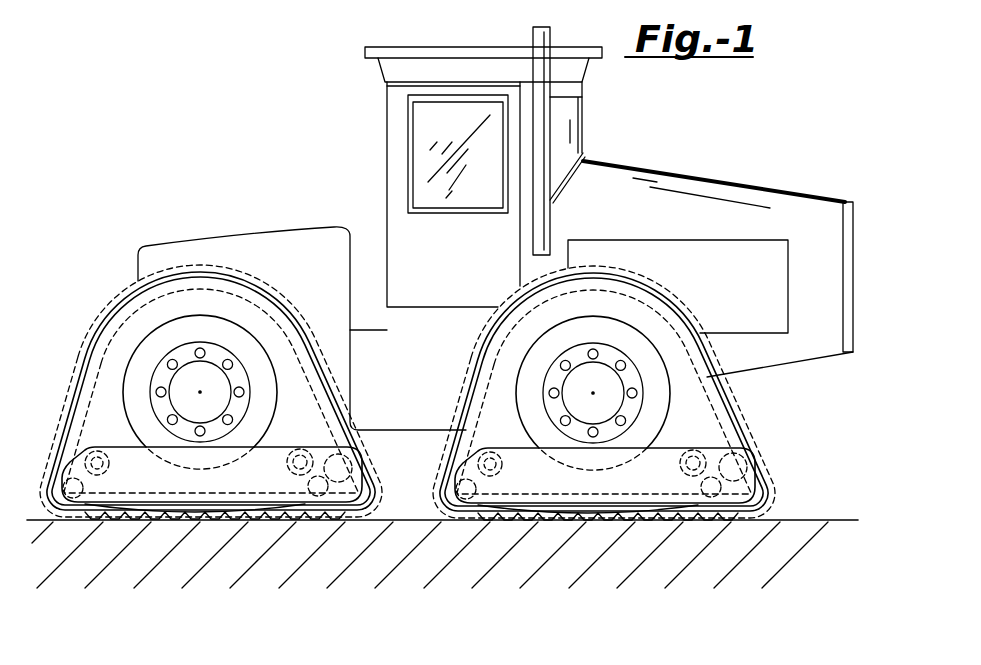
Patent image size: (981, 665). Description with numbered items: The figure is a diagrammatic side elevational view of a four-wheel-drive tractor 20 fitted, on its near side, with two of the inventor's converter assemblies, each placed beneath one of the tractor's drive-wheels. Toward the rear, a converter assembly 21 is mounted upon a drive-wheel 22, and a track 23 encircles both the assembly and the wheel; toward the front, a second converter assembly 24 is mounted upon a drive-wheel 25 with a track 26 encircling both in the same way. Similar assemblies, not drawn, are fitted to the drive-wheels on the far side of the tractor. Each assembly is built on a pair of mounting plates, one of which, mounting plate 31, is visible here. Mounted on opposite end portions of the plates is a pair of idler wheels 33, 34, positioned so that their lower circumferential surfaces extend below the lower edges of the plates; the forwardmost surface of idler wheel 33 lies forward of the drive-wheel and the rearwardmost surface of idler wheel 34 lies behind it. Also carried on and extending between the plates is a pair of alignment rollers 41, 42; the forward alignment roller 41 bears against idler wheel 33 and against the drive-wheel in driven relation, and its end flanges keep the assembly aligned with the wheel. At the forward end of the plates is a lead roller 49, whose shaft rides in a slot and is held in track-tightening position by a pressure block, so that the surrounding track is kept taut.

The four-wheel-drive tractor 20 is at (704, 176).
The converter assembly 21 is at (636, 441).
The drive-wheel 22 is at (609, 393).
The track 23 is at (604, 392).
The converter assembly 24 is at (116, 442).
The drive-wheel 25 is at (302, 455).
The track 26 is at (97, 327).
The mounting plate 31 is at (588, 558).
The idler wheel 33 is at (652, 494).
The idler wheel 34 is at (453, 478).
The forward alignment roller 41 is at (700, 549).
The alignment roller 42 is at (588, 392).
The lead roller 49 is at (761, 452).